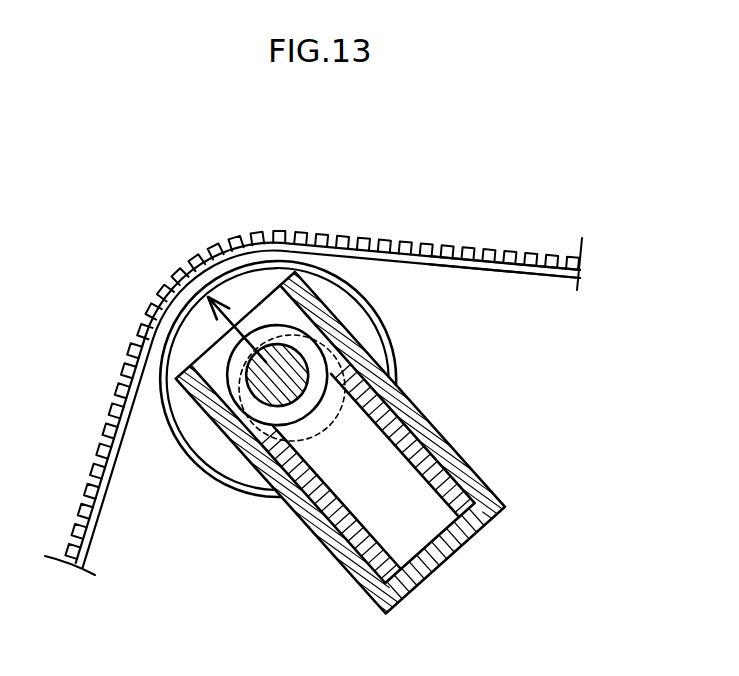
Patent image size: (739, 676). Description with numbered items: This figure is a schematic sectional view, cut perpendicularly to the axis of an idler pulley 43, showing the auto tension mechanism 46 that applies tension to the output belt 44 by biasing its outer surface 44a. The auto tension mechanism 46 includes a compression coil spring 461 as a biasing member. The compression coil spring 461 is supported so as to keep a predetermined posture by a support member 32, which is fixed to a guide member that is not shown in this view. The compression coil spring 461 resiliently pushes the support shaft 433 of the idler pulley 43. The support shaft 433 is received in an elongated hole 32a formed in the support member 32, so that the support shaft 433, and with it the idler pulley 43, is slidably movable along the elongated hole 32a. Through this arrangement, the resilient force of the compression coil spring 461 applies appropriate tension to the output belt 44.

The output belt 44 is at (487, 228).
The outer surface 44a is at (525, 275).
The idler pulley 43 is at (364, 312).
The auto tension mechanism 46 is at (426, 384).
The compression coil spring 461 is at (410, 424).
The support member 32 is at (463, 458).
The elongated hole 32a is at (283, 434).
The support shaft 433 is at (268, 400).